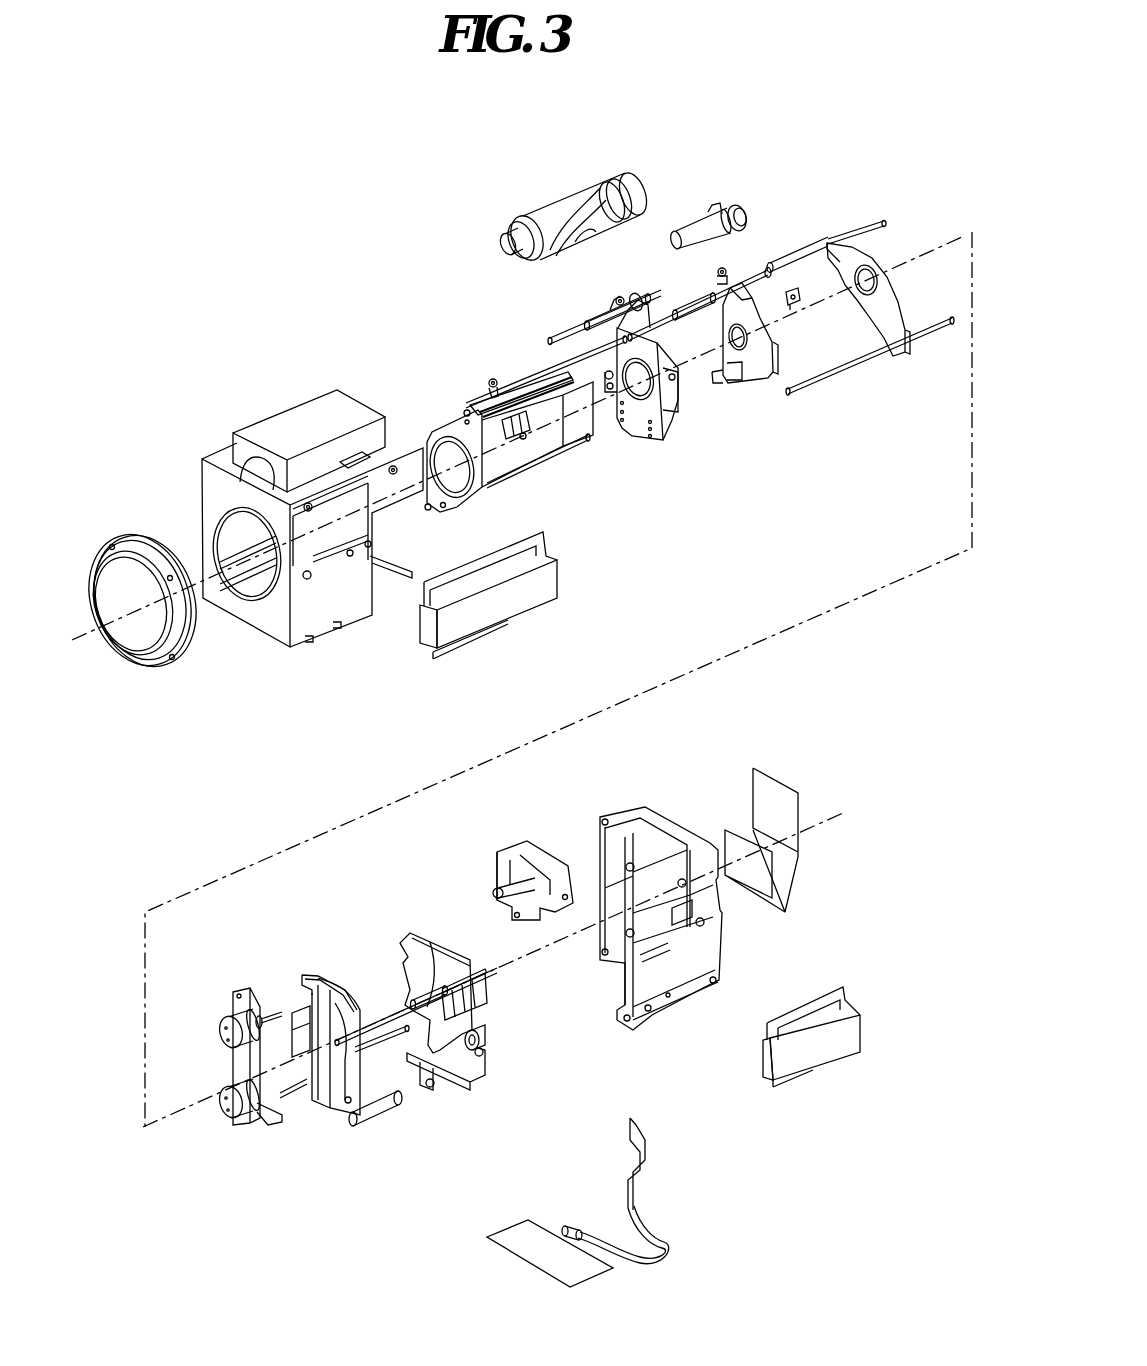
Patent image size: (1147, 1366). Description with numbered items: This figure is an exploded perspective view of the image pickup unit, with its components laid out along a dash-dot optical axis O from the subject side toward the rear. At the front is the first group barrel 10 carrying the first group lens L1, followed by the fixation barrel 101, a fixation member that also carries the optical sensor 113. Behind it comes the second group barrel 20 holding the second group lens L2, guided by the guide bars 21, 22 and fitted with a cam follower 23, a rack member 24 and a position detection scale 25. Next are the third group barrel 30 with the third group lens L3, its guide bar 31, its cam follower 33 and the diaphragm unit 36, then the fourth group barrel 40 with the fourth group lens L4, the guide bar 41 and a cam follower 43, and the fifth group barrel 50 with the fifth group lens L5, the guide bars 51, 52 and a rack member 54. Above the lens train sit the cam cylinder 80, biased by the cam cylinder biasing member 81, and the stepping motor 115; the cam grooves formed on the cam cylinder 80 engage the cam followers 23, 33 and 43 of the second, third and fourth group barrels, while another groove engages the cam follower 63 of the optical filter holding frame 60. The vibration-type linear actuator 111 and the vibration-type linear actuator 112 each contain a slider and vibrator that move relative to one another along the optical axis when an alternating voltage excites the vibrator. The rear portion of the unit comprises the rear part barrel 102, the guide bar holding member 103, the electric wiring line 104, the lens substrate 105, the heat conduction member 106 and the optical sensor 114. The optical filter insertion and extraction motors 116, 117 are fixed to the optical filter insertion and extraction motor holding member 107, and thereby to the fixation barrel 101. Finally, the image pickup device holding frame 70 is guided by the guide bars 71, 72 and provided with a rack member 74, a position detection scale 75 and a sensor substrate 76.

The optical axis O is at (91, 642).
The first group barrel 10 is at (173, 663).
The first group lens L1 is at (141, 643).
The fixation barrel 101 is at (267, 643).
The optical sensor 113 is at (352, 460).
The second group barrel 20 is at (453, 420).
The second group lens L2 is at (452, 496).
The guide bar 21 is at (557, 368).
The guide bar 22 is at (573, 450).
The cam follower 23 is at (485, 382).
The rack member 24 is at (523, 439).
The position detection scale 25 is at (522, 387).
The third group barrel 30 is at (667, 408).
The third group lens L3 is at (633, 403).
The guide bar 31 is at (568, 323).
The cam follower 33 is at (614, 292).
The diaphragm unit 36 is at (648, 450).
The fourth group barrel 40 is at (758, 377).
The fourth group lens L4 is at (743, 380).
The guide bar 41 is at (667, 317).
The cam follower 43 is at (730, 275).
The fifth group barrel 50 is at (892, 297).
The fifth group lens L5 is at (868, 300).
The guide bar 51 is at (860, 232).
The guide bar 52 is at (842, 377).
The rack member 54 is at (792, 289).
The cam cylinder 80 is at (638, 178).
The cam cylinder biasing member 81 is at (502, 235).
The stepping motor 115 is at (733, 205).
The vibration-type linear actuator 111 is at (522, 608).
The rear part barrel 102 is at (620, 808).
The guide bar holding member 103 is at (497, 860).
The electric wiring line 104 is at (668, 1247).
The lens substrate 105 is at (587, 1273).
The heat conduction member 106 is at (752, 792).
The optical filter insertion and extraction motor holding member 107 is at (240, 987).
The vibration-type linear actuator 112 is at (800, 1080).
The optical sensor 114 is at (683, 923).
The optical filter insertion and extraction motor 116 is at (228, 1020).
The optical filter insertion and extraction motor 117 is at (237, 1113).
The optical filter holding frame 60 is at (368, 1123).
The cam follower 63 is at (317, 987).
The image pickup device holding frame 70 is at (463, 1087).
The guide bar 71 is at (375, 1018).
The guide bar 72 is at (382, 1047).
The rack member 74 is at (480, 1050).
The position detection scale 75 is at (483, 1007).
The sensor substrate 76 is at (447, 937).